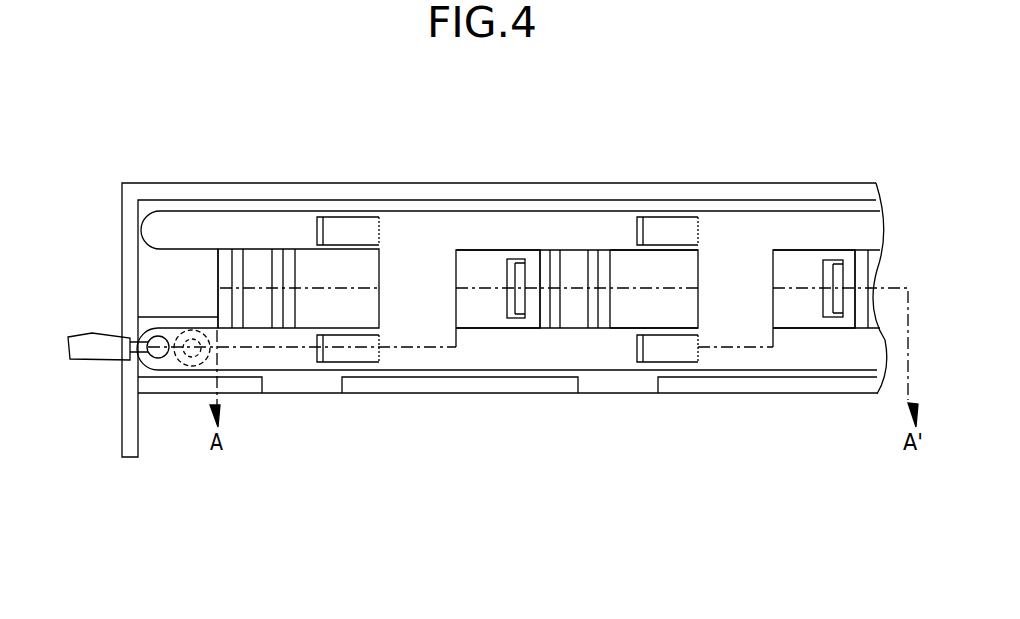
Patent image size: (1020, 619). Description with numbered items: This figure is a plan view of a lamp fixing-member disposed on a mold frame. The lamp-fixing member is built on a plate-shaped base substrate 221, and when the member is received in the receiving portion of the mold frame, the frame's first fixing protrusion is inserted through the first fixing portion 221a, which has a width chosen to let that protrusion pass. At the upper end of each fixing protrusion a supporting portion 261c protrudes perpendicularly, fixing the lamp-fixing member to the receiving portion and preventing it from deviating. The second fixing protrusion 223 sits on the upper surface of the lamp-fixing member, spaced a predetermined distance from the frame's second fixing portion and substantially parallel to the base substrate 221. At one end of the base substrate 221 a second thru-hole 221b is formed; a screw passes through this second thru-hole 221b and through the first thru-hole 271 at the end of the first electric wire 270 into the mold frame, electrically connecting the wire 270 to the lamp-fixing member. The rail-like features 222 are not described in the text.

The base substrate 221 is at (500, 355).
The first fixing portion 221a is at (471, 265).
The second thru-hole 221b is at (140, 343).
The slide rails 222 is at (293, 322).
The second fixing protrusion 223 is at (358, 227).
The supporting portion 261c is at (516, 268).
The first electric wire 270 is at (95, 352).
The first thru-hole 271 is at (190, 352).